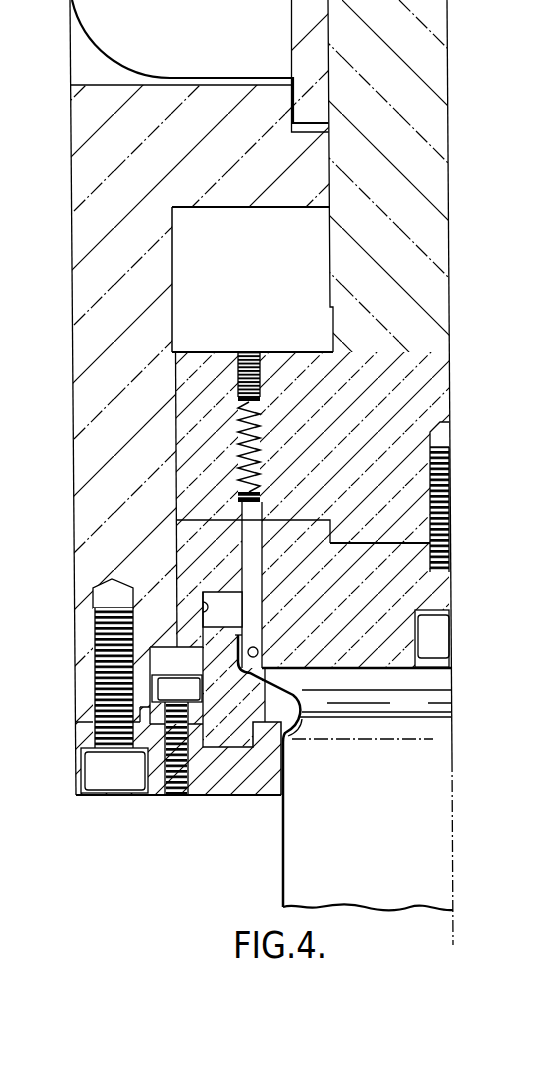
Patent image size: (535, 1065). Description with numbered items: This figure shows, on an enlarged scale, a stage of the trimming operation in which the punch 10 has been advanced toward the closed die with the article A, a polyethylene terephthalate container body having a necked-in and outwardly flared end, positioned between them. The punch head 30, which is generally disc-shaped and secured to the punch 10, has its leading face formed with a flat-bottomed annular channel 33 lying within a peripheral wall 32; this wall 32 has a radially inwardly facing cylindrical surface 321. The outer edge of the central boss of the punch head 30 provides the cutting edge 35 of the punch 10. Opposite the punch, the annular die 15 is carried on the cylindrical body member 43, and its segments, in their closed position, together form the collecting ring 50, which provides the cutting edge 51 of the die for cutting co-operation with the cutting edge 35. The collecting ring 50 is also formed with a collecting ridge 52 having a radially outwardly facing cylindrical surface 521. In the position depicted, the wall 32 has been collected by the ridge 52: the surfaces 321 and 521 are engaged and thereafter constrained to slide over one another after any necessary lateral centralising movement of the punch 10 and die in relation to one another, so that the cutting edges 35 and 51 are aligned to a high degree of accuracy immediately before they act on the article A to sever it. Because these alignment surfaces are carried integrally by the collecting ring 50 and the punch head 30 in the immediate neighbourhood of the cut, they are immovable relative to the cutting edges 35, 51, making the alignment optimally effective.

The punch 10 is at (430, 250).
The annular die 15 is at (152, 798).
The punch head 30 is at (405, 595).
The peripheral wall 32 is at (188, 619).
The flat-bottomed annular channel 33 is at (207, 597).
The cutting edge 35 is at (258, 650).
The cylindrical body member 43 is at (72, 263).
The collecting ring 50 is at (229, 730).
The cutting edge 51 is at (265, 675).
The collecting ridge 52 is at (223, 590).
The radially inwardly facing cylindrical surface 321 is at (207, 607).
The radially outwardly facing cylindrical surface 521 is at (203, 658).
The article A is at (403, 808).